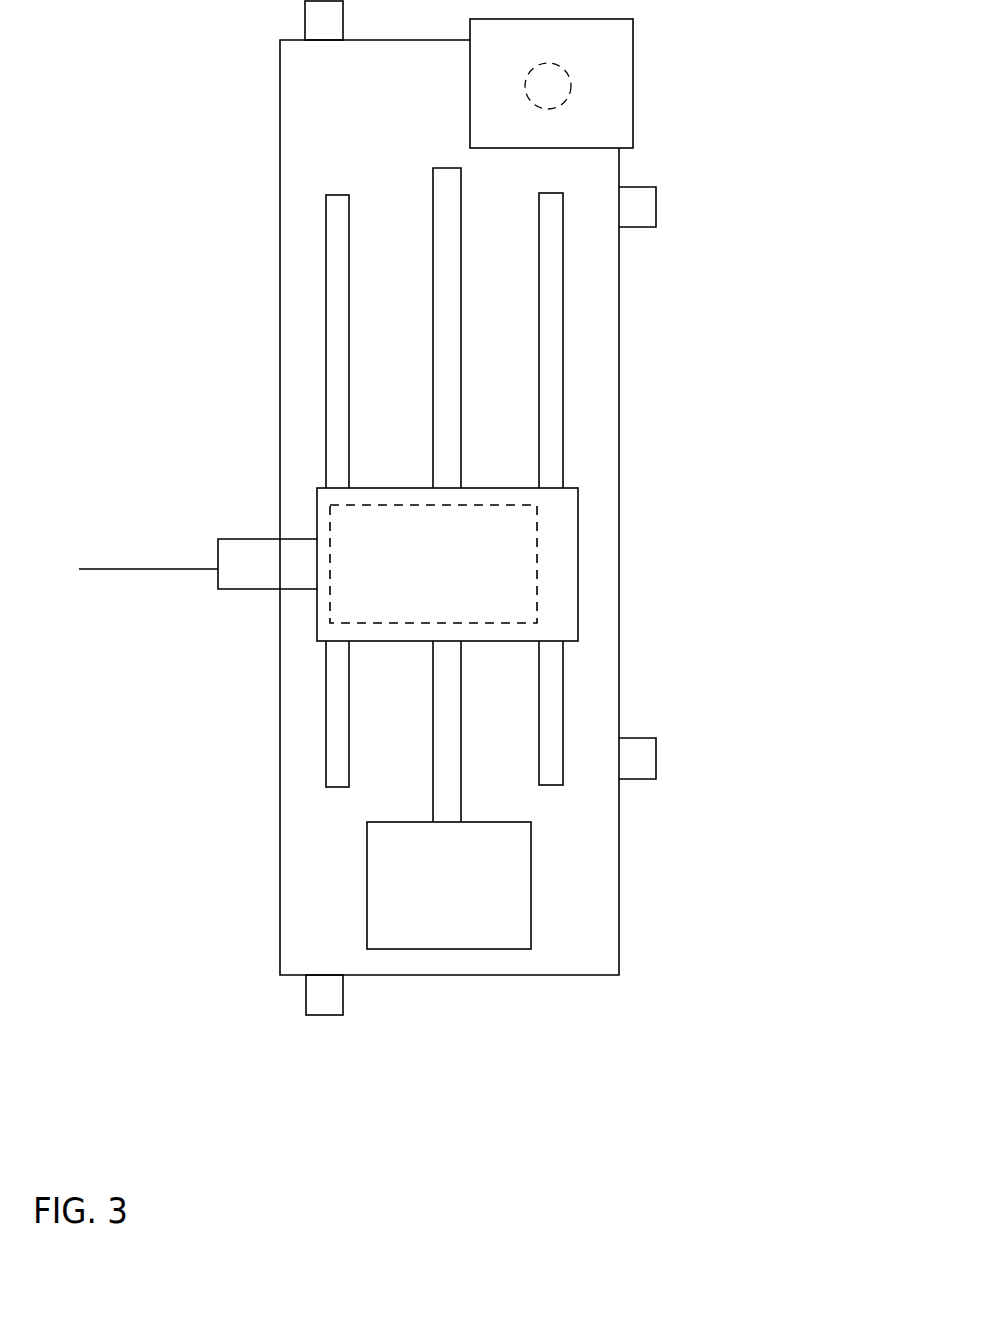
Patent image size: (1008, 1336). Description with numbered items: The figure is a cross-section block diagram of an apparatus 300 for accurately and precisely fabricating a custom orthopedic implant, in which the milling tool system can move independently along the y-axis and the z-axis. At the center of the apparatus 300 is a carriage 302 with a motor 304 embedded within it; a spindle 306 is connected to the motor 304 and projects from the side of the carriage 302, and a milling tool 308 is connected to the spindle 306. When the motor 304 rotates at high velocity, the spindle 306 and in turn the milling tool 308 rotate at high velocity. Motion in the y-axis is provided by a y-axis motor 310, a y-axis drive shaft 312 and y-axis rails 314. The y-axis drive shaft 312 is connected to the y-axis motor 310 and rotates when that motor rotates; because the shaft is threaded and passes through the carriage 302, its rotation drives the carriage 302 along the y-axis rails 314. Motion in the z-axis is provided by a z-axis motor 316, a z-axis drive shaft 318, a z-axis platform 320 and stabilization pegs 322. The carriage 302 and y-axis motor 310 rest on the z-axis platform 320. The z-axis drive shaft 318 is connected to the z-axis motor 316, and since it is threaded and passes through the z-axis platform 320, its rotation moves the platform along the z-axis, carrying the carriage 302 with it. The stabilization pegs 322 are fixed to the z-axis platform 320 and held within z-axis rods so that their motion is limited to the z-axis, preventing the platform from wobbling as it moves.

The apparatus 300 is at (456, 596).
The carriage 302 is at (560, 616).
The motor 304 is at (434, 502).
The spindle 306 is at (238, 572).
The milling tool 308 is at (109, 575).
The y-axis motor 310 is at (446, 937).
The y-axis drive shaft 312 is at (440, 308).
The y-axis rails 314 is at (558, 788).
The z-axis motor 316 is at (633, 47).
The z-axis drive shaft 318 is at (568, 118).
The z-axis platform 320 is at (618, 902).
The stabilization pegs 322 is at (642, 226).